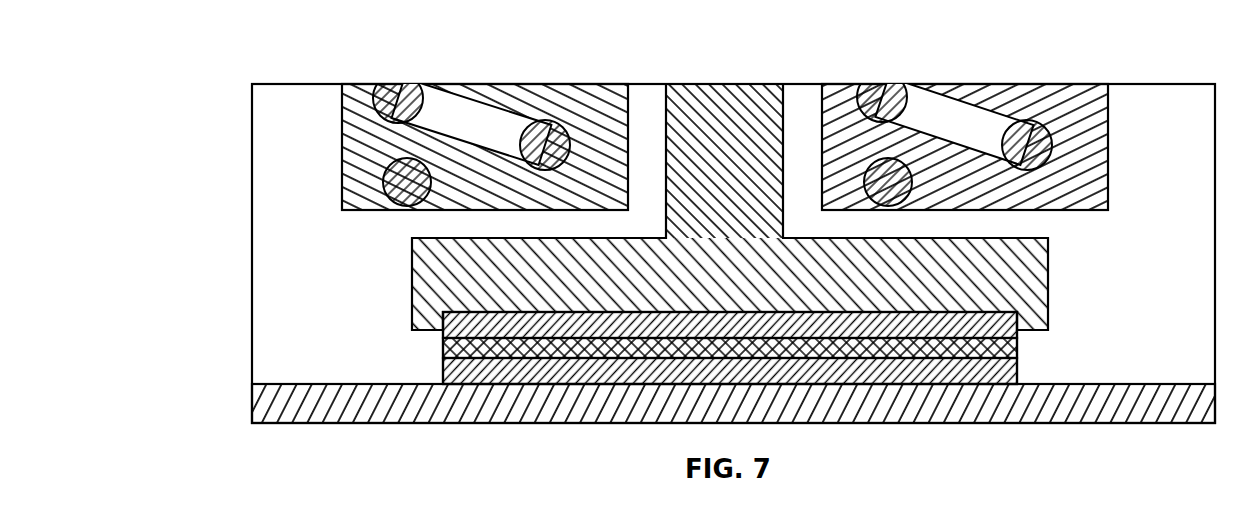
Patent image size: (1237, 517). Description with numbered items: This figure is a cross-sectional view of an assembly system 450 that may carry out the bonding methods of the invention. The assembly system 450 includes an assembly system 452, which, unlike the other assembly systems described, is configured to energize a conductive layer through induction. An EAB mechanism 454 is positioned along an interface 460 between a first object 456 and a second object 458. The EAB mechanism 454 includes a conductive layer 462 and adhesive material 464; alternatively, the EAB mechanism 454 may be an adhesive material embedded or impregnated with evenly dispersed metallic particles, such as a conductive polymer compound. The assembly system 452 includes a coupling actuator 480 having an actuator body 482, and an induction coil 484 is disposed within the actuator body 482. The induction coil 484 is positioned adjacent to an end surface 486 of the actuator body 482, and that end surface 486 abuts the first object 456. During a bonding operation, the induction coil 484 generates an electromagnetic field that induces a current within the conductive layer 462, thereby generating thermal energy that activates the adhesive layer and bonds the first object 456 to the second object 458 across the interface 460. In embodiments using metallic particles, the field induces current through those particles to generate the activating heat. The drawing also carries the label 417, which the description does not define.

The assembly system 450 is at (225, 104).
The assembly system 452 is at (507, 70).
The coupling actuator 480 is at (449, 106).
The end surface 486 is at (478, 211).
The actuator body 482 is at (1012, 93).
The induction coil 484 is at (1035, 124).
The first object 456 is at (1037, 283).
The plate lower surface 417 is at (988, 296).
The interface 460 is at (1020, 372).
The adhesive material 464 is at (761, 318).
The conductive layer 462 is at (848, 352).
The EAB mechanism 454 is at (530, 366).
The second object 458 is at (960, 408).